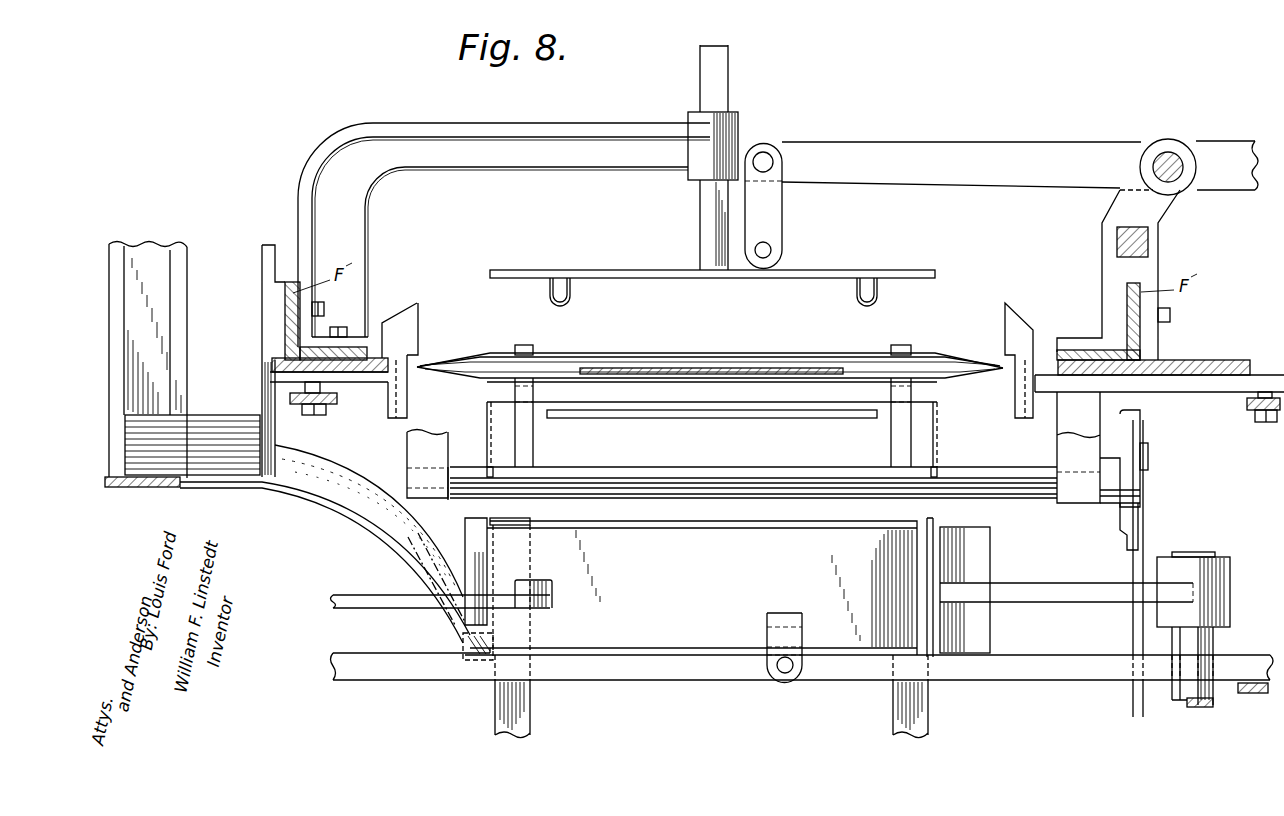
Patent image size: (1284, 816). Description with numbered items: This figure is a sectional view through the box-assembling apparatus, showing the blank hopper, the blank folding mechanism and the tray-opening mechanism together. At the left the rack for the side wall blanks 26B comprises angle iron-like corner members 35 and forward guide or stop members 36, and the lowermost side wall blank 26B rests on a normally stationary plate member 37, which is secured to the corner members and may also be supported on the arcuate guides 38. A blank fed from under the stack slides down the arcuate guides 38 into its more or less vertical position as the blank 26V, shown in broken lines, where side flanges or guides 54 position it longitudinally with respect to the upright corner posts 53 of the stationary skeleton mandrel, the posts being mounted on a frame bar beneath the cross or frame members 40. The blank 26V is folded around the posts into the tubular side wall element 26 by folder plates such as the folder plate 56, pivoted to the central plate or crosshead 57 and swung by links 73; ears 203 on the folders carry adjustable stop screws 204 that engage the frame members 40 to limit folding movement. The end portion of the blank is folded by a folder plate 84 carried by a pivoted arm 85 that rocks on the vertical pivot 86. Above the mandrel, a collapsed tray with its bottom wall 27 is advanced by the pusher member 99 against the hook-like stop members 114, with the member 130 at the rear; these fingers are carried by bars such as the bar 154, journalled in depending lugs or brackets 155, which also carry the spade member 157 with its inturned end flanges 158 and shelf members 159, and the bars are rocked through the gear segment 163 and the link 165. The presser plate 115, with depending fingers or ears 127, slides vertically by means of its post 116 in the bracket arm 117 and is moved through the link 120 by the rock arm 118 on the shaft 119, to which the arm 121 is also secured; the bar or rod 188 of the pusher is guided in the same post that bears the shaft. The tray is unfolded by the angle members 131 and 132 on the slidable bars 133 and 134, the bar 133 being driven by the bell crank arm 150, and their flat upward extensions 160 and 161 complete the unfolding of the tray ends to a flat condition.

The corner members 35 is at (153, 246).
The forward guide or stop members 36 is at (262, 255).
The plate member 37 is at (163, 478).
The side wall blank 26B is at (219, 414).
The arcuate guides 38 is at (334, 505).
The side flanges or guides 54 is at (323, 462).
The bar 133 is at (365, 376).
The bell crank arm 150 is at (287, 404).
The angle member 131 is at (393, 417).
The upward extension 160 is at (420, 320).
The bracket arm 117 is at (568, 129).
The post 116 is at (712, 68).
The link 120 is at (775, 213).
The rock arm 118 is at (940, 148).
The arm 121 is at (1222, 153).
The shaft 119 is at (1176, 160).
The bar or rod 188 is at (1149, 242).
The bar 134 is at (1172, 380).
The presser plate 115 is at (812, 272).
The depending fingers or ears 127 is at (565, 292).
The upward extension 161 is at (1007, 318).
The angle member 132 is at (1017, 398).
The hook-like stop members 114 is at (522, 345).
The member 130 is at (522, 392).
The bottom wall 27 is at (615, 357).
The pusher member 99 is at (804, 368).
The shelf members 159 is at (647, 413).
The spade member 157 is at (835, 407).
The inturned end flanges 158 is at (488, 443).
The lugs or brackets 155 is at (412, 448).
The bar 154 is at (1030, 478).
The gear segment 163 is at (1138, 437).
The link 165 is at (1133, 620).
The vertical pivot 86 is at (1207, 638).
The pivoted arm 85 is at (1060, 590).
The folder plate 84 is at (985, 541).
The tubular side wall element 26 is at (550, 523).
The folder plate 56 is at (828, 543).
The central plate or crosshead 57 is at (470, 565).
The blank in vertical position 26V is at (406, 573).
The links 73 is at (380, 604).
The cross or frame members 40 is at (652, 681).
The upright corner posts 53 is at (530, 695).
The ears 203 is at (797, 634).
The adjustable stop screws 204 is at (782, 673).